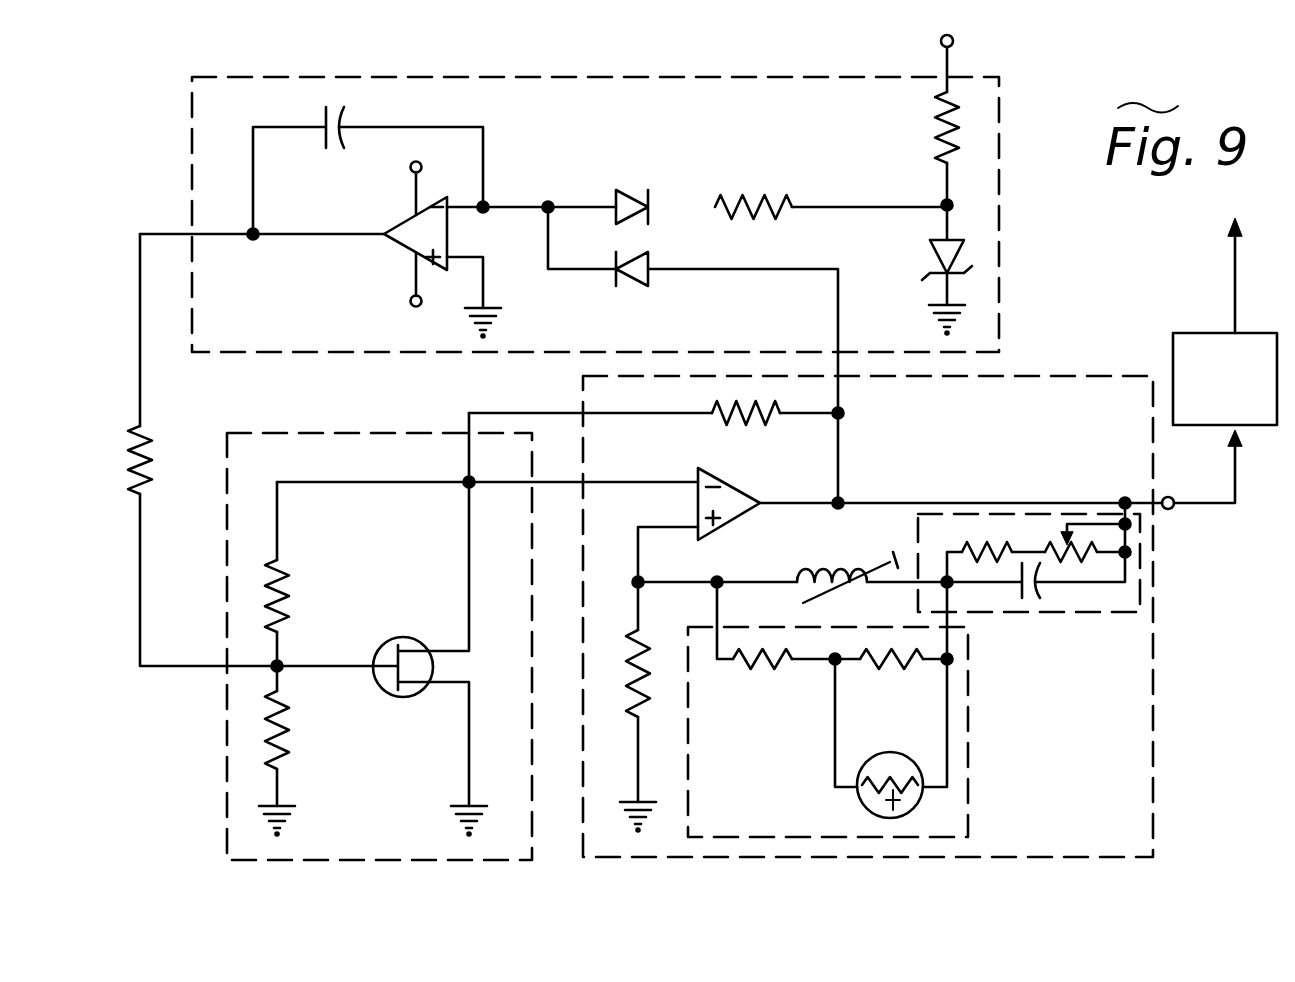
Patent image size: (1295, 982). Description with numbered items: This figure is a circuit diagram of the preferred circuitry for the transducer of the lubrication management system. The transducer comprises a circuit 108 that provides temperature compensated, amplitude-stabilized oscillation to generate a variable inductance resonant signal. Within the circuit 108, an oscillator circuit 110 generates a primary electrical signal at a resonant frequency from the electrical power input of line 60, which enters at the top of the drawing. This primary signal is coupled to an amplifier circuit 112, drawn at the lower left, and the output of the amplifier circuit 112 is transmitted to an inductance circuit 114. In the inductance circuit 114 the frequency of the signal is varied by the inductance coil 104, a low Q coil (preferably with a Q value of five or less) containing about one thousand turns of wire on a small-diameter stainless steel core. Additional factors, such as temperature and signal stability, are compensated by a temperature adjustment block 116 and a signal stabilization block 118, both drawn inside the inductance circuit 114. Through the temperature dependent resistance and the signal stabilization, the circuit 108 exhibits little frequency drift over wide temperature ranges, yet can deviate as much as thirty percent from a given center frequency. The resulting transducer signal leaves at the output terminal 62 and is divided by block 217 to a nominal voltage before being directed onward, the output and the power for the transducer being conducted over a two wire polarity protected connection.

The line 60 is at (940, 47).
The output terminal 62 is at (1170, 510).
The inductance coil 104 is at (818, 574).
The circuit 108 is at (1002, 66).
The oscillator circuit 110 is at (192, 127).
The amplifier circuit 112 is at (226, 733).
The inductance circuit 114 is at (1043, 376).
The temperature adjustment block 116 is at (970, 761).
The signal stabilization block 118 is at (1135, 612).
The block 217 is at (1192, 333).